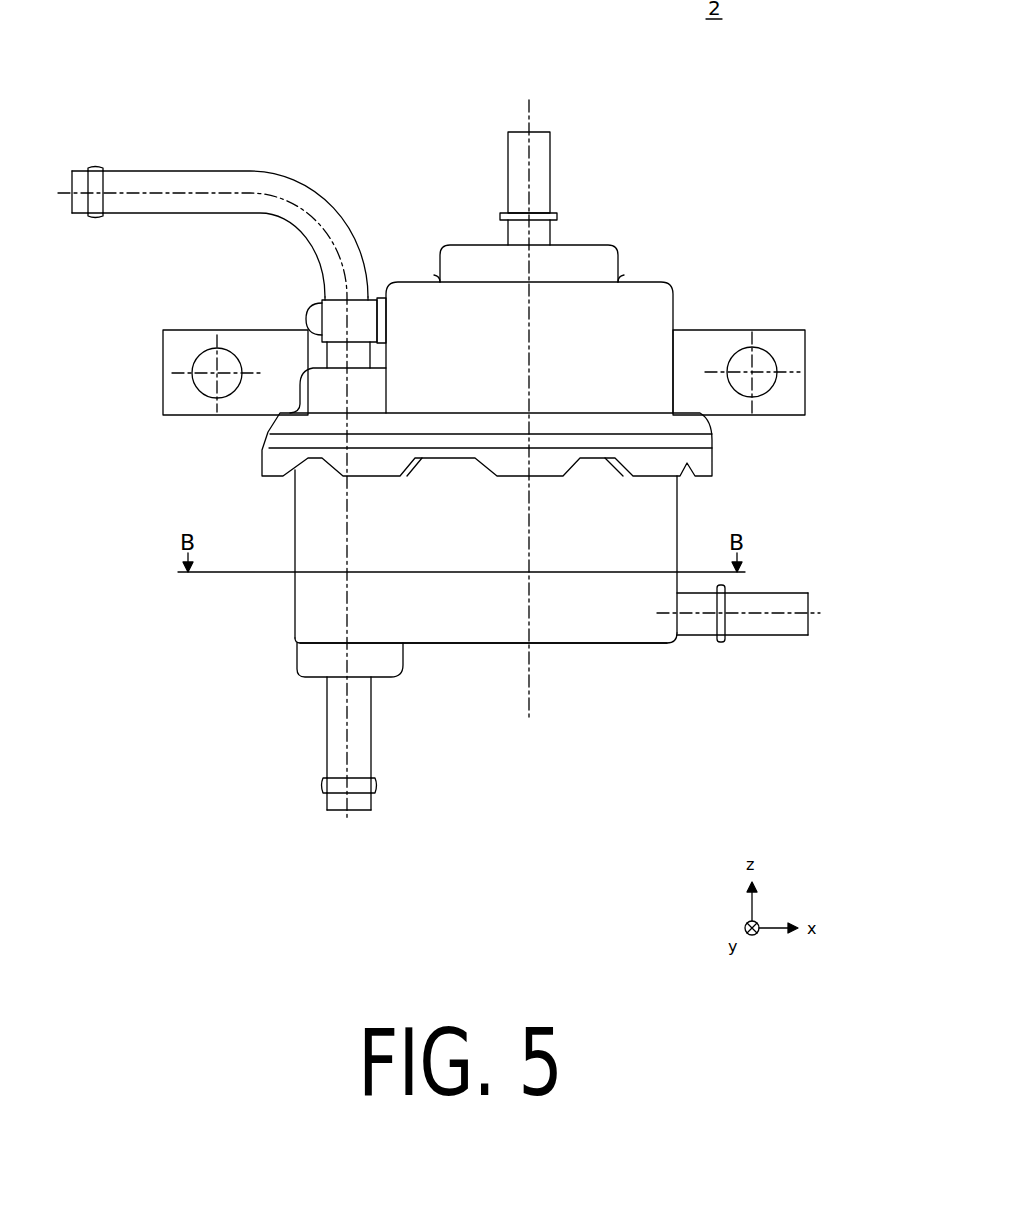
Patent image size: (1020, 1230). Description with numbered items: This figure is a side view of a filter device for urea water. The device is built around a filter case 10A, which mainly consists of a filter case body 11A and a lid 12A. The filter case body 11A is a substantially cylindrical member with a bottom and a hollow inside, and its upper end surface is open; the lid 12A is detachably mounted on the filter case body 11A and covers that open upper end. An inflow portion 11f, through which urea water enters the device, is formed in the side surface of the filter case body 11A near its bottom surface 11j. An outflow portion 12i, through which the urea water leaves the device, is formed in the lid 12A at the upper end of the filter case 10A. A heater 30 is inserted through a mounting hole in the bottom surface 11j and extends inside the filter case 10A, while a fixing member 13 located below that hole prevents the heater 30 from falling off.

The heater 30 is at (145, 190).
The outflow portion 12i is at (543, 192).
The lid 12A is at (707, 436).
The filter case body 11A is at (680, 520).
The filter case 10A is at (563, 387).
The fixing member 13 is at (315, 667).
The bottom surface 11j is at (637, 645).
The inflow portion 11f is at (760, 627).